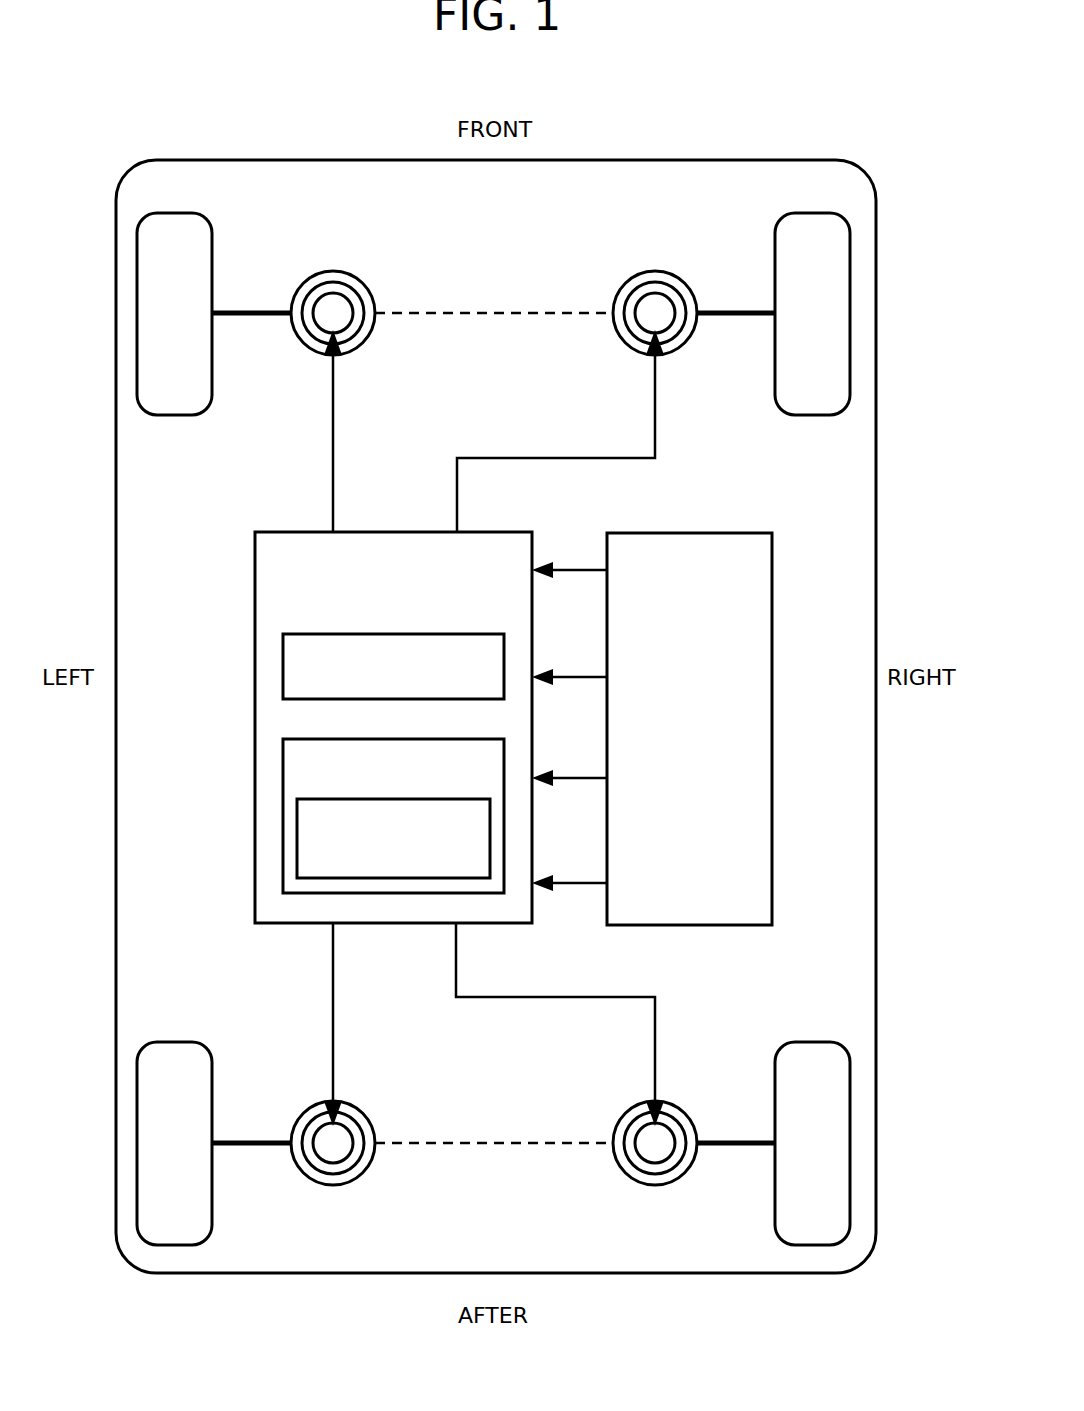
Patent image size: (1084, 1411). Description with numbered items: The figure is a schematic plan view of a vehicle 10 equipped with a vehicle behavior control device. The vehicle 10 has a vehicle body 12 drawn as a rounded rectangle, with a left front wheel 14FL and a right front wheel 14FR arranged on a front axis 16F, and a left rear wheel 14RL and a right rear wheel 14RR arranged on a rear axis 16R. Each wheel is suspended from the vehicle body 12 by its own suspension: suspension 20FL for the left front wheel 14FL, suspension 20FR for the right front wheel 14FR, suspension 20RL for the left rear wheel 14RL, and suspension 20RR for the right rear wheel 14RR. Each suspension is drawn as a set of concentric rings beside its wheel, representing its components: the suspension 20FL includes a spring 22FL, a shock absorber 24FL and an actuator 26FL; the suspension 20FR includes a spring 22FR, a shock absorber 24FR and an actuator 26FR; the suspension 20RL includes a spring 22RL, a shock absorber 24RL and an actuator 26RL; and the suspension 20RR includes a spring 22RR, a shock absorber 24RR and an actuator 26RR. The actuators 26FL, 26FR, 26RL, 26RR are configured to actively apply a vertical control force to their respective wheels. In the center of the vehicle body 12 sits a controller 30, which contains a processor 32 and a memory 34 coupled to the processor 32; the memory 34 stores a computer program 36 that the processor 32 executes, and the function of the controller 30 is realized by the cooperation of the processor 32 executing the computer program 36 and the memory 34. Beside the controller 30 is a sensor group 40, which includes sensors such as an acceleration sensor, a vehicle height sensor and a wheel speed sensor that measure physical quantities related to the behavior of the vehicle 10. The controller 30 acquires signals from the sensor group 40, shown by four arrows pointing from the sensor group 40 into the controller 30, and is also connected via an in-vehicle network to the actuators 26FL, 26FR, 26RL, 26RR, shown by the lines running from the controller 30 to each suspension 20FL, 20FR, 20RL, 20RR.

The vehicle 10 is at (752, 150).
The vehicle body 12 is at (273, 158).
The left front wheel 14FL is at (170, 418).
The right front wheel 14FR is at (814, 418).
The left rear wheel 14RL is at (170, 1040).
The right rear wheel 14RR is at (808, 1040).
The front axis 16F is at (471, 318).
The rear axis 16R is at (485, 1142).
The suspension 20FL is at (371, 272).
The suspension 20FR is at (612, 270).
The suspension 20RL is at (374, 1102).
The suspension 20RR is at (611, 1100).
The spring 22FL is at (330, 270).
The spring 22FR is at (683, 275).
The spring 22RL is at (308, 1108).
The spring 22RR is at (680, 1108).
The shock absorber 24FL is at (369, 304).
The shock absorber 24FR is at (620, 304).
The shock absorber 24RL is at (322, 1182).
The shock absorber 24RR is at (657, 1184).
The actuator 26FL is at (314, 325).
The actuator 26FR is at (628, 328).
The actuator 26RL is at (350, 1162).
The actuator 26RR is at (637, 1160).
The controller 30 is at (255, 558).
The processor 32 is at (283, 668).
The memory 34 is at (283, 777).
The computer program 36 is at (297, 852).
The sensor group 40 is at (772, 690).